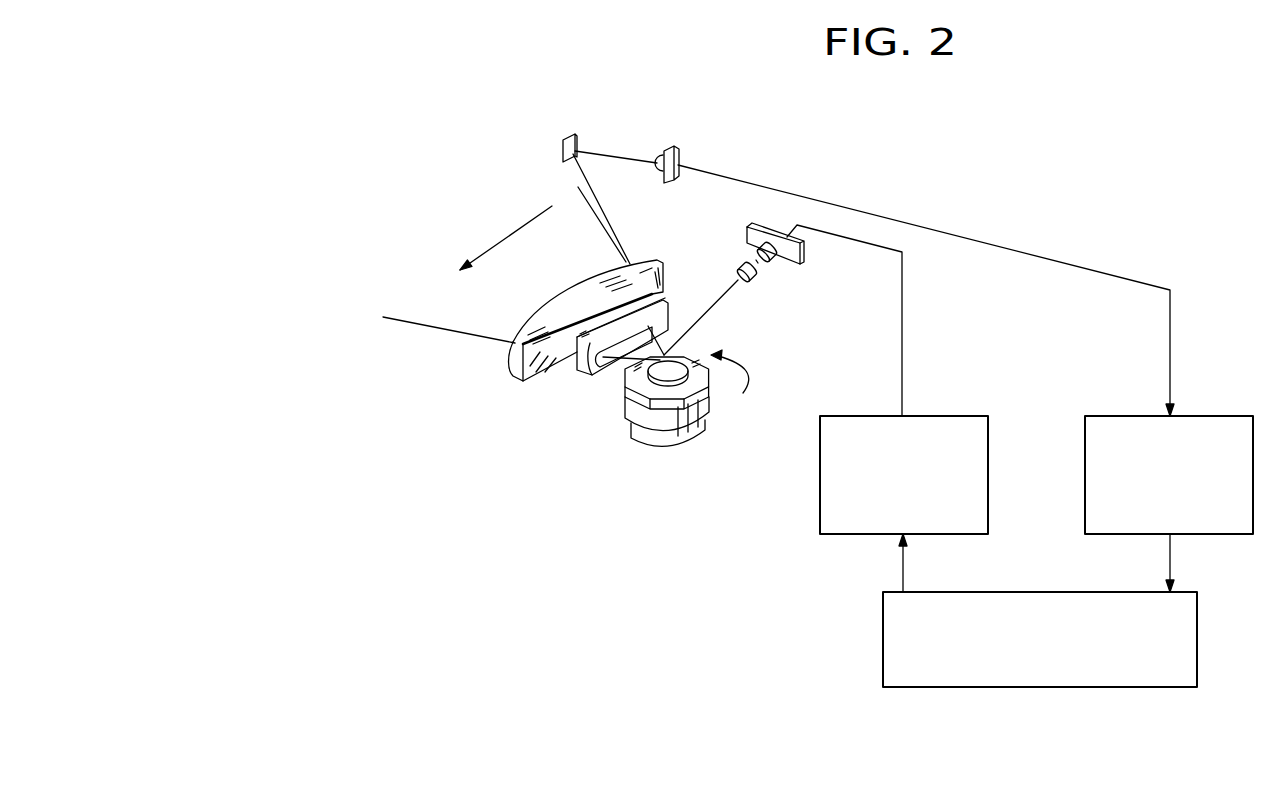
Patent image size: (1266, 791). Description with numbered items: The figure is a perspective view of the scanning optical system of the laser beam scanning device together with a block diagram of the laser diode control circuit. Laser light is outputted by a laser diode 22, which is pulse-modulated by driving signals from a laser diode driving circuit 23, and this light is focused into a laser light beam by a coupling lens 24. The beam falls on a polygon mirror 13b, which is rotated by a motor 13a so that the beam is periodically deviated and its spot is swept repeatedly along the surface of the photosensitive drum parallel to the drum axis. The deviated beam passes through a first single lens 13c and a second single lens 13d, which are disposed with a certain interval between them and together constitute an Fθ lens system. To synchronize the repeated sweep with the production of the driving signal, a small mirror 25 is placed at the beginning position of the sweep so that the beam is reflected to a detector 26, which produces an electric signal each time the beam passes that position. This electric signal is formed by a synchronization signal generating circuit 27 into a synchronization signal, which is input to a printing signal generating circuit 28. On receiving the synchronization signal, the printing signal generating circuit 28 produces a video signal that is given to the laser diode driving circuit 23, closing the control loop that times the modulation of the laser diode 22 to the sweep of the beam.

The motor 13a is at (698, 438).
The polygon mirror 13b is at (717, 337).
The first single lens 13c is at (580, 372).
The second single lens 13d is at (513, 378).
The laser diode 22 is at (803, 253).
The laser diode driving circuit 23 is at (970, 415).
The coupling lens 24 is at (755, 278).
The small mirror 25 is at (568, 137).
The detector 26 is at (680, 150).
The synchronization signal generating circuit 27 is at (1235, 415).
The printing signal generating circuit 28 is at (1197, 652).